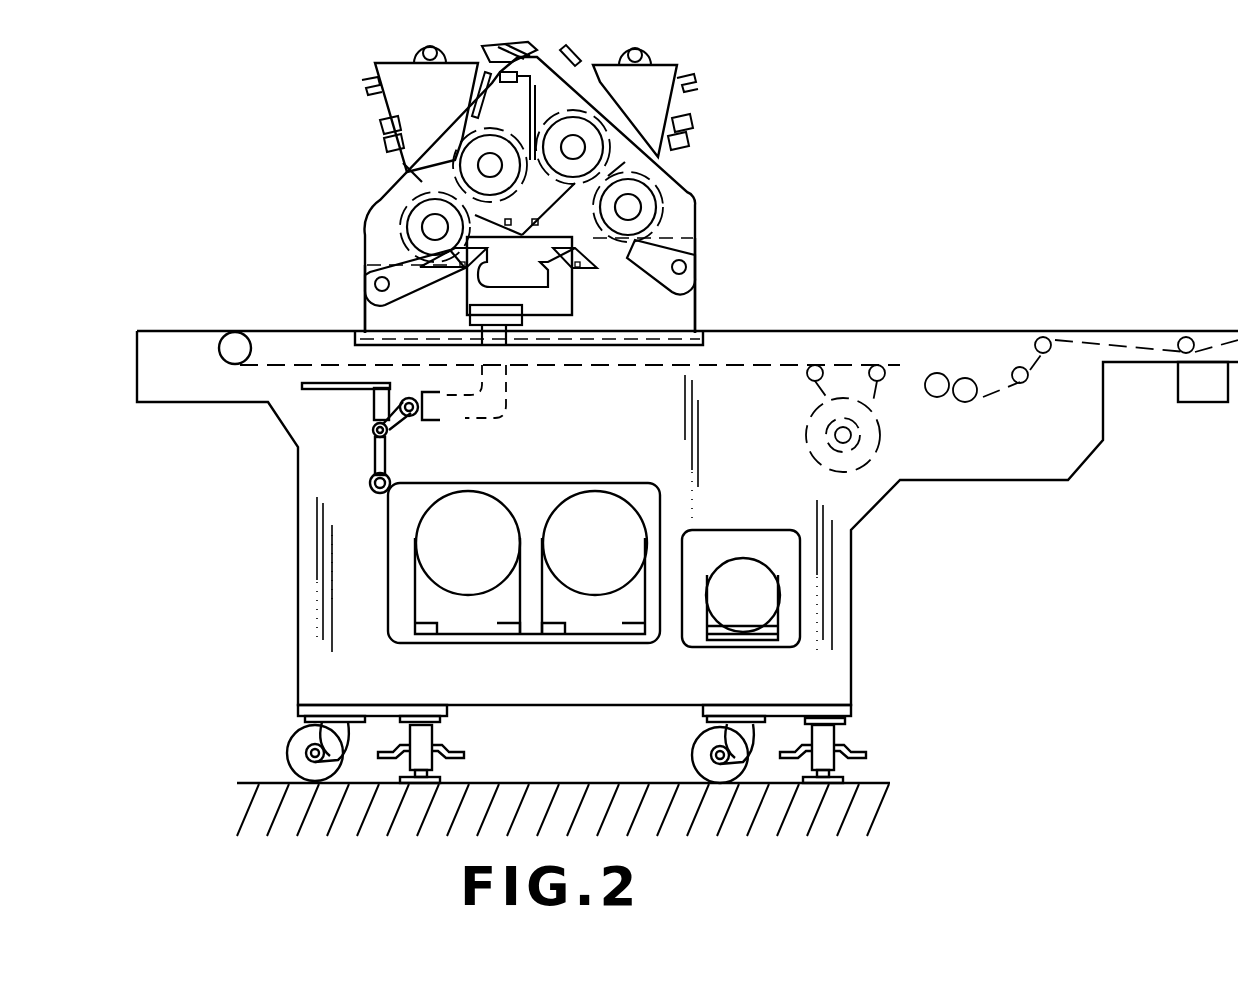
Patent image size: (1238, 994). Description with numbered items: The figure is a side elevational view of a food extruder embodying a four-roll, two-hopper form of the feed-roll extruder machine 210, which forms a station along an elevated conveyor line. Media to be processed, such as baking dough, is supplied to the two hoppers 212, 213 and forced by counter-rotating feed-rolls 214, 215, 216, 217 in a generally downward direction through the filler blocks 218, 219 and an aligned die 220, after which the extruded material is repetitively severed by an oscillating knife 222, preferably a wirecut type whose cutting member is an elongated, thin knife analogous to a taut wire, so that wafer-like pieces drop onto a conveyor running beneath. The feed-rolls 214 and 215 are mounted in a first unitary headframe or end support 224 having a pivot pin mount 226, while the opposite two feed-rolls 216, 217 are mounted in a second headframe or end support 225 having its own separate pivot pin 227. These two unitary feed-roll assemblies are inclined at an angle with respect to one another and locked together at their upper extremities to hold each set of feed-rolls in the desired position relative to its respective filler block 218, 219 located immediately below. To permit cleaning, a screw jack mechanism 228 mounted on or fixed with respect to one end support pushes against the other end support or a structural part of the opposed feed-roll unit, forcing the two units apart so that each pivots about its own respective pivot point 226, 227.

The feed-roll extruder machine 210 is at (780, 160).
The hopper 212 is at (660, 63).
The hopper 213 is at (405, 118).
The feed-roll 214 is at (652, 205).
The feed-roll 215 is at (587, 137).
The feed-roll 216 is at (425, 220).
The feed-roll 217 is at (485, 155).
The filler block 218 is at (560, 208).
The filler block 219 is at (425, 200).
The die 220 is at (545, 283).
The oscillating knife 222 is at (487, 400).
The first headframe 224 is at (708, 228).
The second headframe 225 is at (370, 250).
The pivot pin mount 226 is at (693, 277).
The pivot pin 227 is at (370, 290).
The screw jack mechanism 228 is at (478, 40).